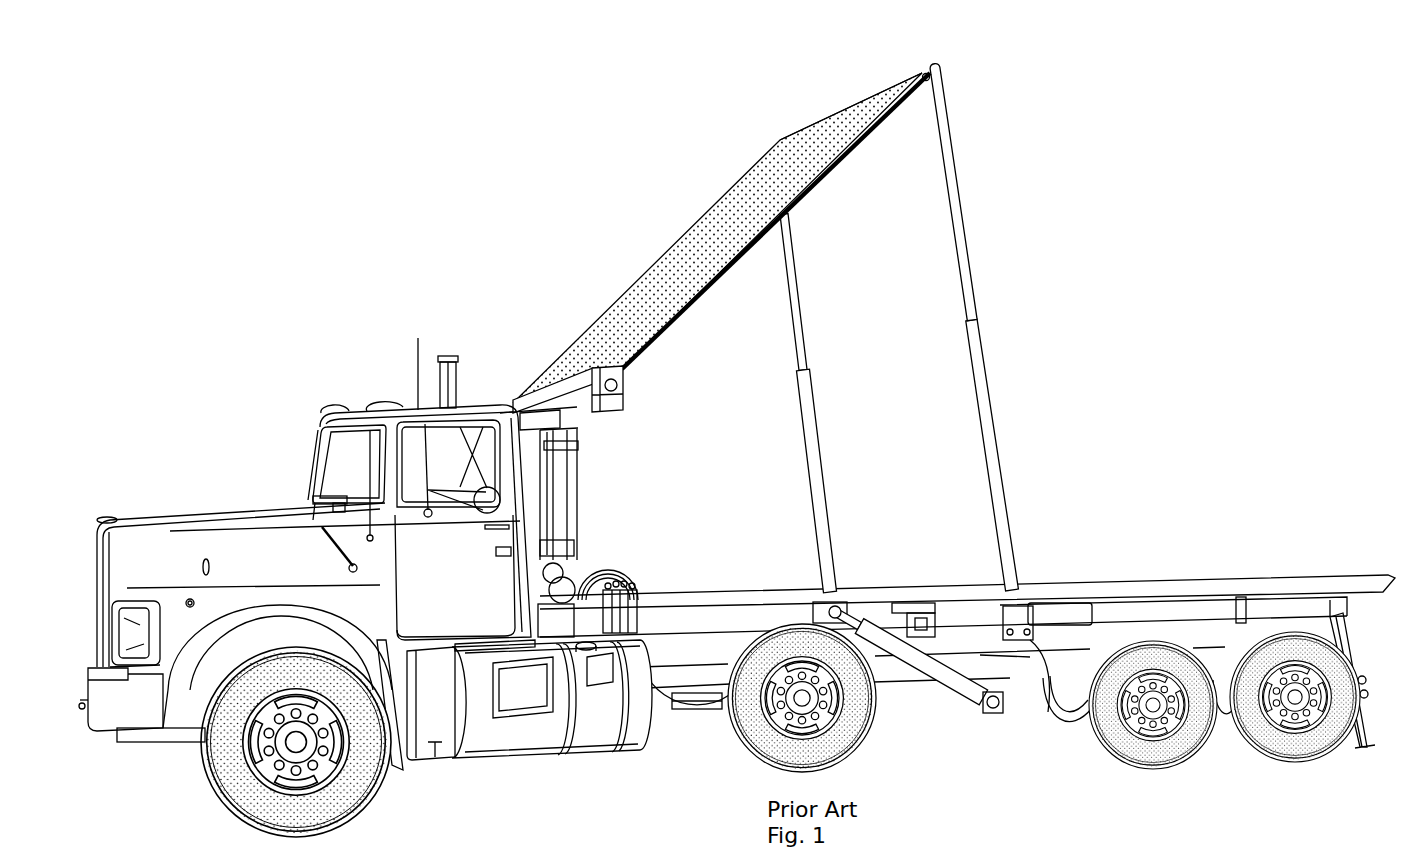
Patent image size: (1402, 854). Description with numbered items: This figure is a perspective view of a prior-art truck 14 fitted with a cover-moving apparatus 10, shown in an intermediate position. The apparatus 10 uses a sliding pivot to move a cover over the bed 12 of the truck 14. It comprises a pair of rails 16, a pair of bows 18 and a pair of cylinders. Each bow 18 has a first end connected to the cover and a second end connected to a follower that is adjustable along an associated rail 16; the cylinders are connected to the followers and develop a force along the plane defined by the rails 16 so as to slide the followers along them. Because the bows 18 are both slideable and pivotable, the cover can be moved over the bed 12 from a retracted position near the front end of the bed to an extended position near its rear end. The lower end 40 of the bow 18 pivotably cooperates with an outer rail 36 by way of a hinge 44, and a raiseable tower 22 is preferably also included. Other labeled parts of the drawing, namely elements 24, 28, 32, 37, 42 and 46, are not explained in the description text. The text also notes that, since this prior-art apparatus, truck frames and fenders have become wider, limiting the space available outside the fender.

The apparatus 10 is at (1022, 199).
The bed 12 is at (1294, 575).
The truck 14 is at (204, 505).
The rails 16 is at (1183, 606).
The bows 18 is at (823, 462).
The raiseable tower 22 is at (583, 497).
The boom base 24 is at (556, 400).
The side panel lower section 28 is at (688, 268).
The side panel upper section 32 is at (844, 124).
The outer rail 36 is at (1076, 611).
The mounting brackets 37 is at (932, 602).
The lower end of the bow 40 is at (1040, 611).
The boom support pole 42 is at (950, 118).
The hinge 44 is at (1040, 706).
The boom tip connection 46 is at (928, 82).